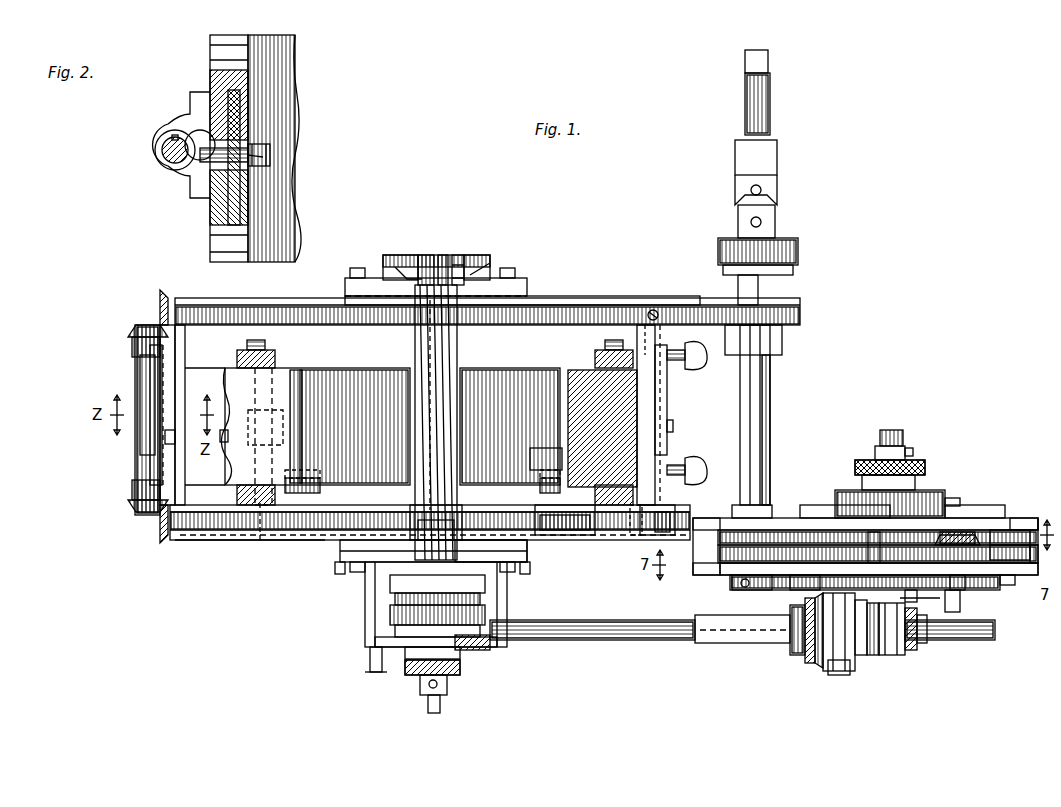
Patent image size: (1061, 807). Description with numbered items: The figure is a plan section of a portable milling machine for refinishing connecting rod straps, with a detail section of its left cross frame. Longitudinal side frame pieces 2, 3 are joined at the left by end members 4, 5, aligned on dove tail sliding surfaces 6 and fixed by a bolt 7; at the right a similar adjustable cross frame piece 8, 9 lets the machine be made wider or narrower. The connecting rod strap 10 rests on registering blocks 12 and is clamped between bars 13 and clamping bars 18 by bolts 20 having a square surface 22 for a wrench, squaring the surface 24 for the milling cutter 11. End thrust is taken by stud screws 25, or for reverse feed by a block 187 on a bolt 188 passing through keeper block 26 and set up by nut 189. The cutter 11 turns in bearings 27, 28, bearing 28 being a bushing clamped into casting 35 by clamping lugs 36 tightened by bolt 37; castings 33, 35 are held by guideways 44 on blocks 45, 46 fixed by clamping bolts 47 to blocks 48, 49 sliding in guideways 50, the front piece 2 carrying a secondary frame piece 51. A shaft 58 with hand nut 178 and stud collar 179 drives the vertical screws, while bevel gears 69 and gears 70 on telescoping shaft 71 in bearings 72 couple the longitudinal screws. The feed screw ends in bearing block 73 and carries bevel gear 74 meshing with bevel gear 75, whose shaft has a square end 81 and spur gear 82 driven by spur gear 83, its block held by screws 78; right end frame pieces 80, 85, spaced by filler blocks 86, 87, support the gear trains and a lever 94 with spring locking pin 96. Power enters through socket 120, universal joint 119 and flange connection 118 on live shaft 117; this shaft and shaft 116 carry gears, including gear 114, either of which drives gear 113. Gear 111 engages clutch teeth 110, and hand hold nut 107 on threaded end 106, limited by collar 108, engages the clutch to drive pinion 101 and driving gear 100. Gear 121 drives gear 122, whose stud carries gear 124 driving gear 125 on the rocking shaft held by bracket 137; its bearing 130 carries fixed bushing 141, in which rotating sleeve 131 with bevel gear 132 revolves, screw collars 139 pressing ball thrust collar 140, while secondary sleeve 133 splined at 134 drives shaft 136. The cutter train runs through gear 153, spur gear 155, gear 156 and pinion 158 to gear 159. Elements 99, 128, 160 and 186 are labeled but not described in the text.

In FIG. 1, the longitudinal side frame piece 2 is at (205, 540).
In FIG. 2, the longitudinal side frame piece 3 is at (280, 202).
In FIG. 1, the longitudinal side frame piece 3 is at (301, 308).
In FIG. 2, the cross frame member 4 is at (260, 162).
In FIG. 1, the cross frame member 4 is at (176, 455).
In FIG. 2, the cross frame member 5 is at (210, 72).
In FIG. 1, the cross frame member 5 is at (135, 372).
In FIG. 2, the dove tail sliding surfaces 6 is at (235, 120).
In FIG. 1, the dove tail sliding surfaces 6 is at (173, 392).
In FIG. 2, the bolt 7 is at (265, 143).
In FIG. 1, the bolt 7 is at (673, 425).
In FIG. 1, the cross frame piece 8 is at (645, 308).
In FIG. 1, the cross frame piece 9 is at (661, 402).
In FIG. 1, the connecting rod strap 10 is at (349, 370).
In FIG. 1, the milling cutter 11 is at (448, 390).
In FIG. 1, the registering blocks 12 is at (310, 472).
In FIG. 1, the bars 13 is at (260, 540).
In FIG. 1, the clamping bars 18 is at (275, 352).
In FIG. 1, the clamping bolts 20 is at (247, 342).
In FIG. 1, the square surface 22 is at (283, 420).
In FIG. 1, the surface 24 is at (386, 396).
In FIG. 1, the stud screws 25 is at (707, 357).
In FIG. 1, the keeper block 26 is at (645, 535).
In FIG. 1, the bearing 27 is at (436, 529).
In FIG. 1, the bearing 28 is at (438, 313).
In FIG. 1, the vertical casting 33 is at (375, 585).
In FIG. 1, the casting 35 is at (485, 257).
In FIG. 1, the clamping lugs 36 is at (442, 258).
In FIG. 1, the bolt 37 is at (460, 259).
In FIG. 1, the guideway 44 is at (412, 235).
In FIG. 1, the block 45 is at (530, 568).
In FIG. 1, the block 46 is at (367, 277).
In FIG. 1, the clamping bolts 47 is at (353, 268).
In FIG. 1, the block 48 is at (357, 550).
In FIG. 1, the block 49 is at (527, 280).
In FIG. 1, the guideways 50 is at (619, 296).
In FIG. 1, the secondary frame piece 51 is at (240, 530).
In FIG. 1, the shaft 58 is at (448, 693).
In FIG. 1, the bevel gears 69 is at (164, 290).
In FIG. 1, the gears 70 is at (129, 327).
In FIG. 2, the telescoping shaft 71 is at (170, 152).
In FIG. 1, the telescoping shaft 71 is at (137, 440).
In FIG. 1, the bearings 72 is at (132, 340).
In FIG. 1, the bearing block 73 is at (925, 503).
In FIG. 1, the bevel gear 74 is at (955, 497).
In FIG. 1, the bevel gear 75 is at (960, 537).
In FIG. 1, the screws 78 is at (965, 532).
In FIG. 1, the frame piece 80 is at (1030, 575).
In FIG. 1, the outer end 81 is at (958, 610).
In FIG. 1, the spur gear 82 is at (960, 592).
In FIG. 1, the spur gear 83 is at (995, 549).
In FIG. 1, the frame piece 85 is at (1020, 522).
In FIG. 1, the filler block 86 is at (1030, 545).
In FIG. 1, the filler block 87 is at (715, 578).
In FIG. 1, the lever 94 is at (1007, 585).
In FIG. 1, the spring locking pin 96 is at (920, 605).
In FIG. 1, the edge 99 is at (1045, 517).
In FIG. 1, the driving gear 100 is at (990, 532).
In FIG. 1, the pinion 101 is at (862, 477).
In FIG. 1, the outer end 106 is at (891, 428).
In FIG. 1, the hand hold nut 107 is at (860, 460).
In FIG. 1, the collar 108 is at (893, 448).
In FIG. 1, the spur gear teeth 110 is at (845, 503).
In FIG. 1, the gear 111 is at (807, 505).
In FIG. 1, the gear 113 is at (768, 520).
In FIG. 1, the gear 114 is at (725, 519).
In FIG. 1, the shaft 116 is at (768, 440).
In FIG. 1, the live driving shaft 117 is at (770, 382).
In FIG. 1, the flange connection 118 is at (798, 253).
In FIG. 1, the universal joint 119 is at (777, 162).
In FIG. 1, the socket 120 is at (768, 90).
In FIG. 1, the gear 121 is at (798, 580).
In FIG. 1, the gear 122 is at (888, 558).
In FIG. 1, the gear 124 is at (915, 640).
In FIG. 1, the gear 125 is at (798, 655).
In FIG. 1, the collar 128 is at (912, 652).
In FIG. 1, the bearing 130 is at (835, 675).
In FIG. 1, the rotating sleeve 131 is at (810, 664).
In FIG. 1, the bevel gear 132 is at (820, 670).
In FIG. 1, the secondary sleeve 133 is at (770, 643).
In FIG. 1, the spline 134 is at (717, 643).
In FIG. 1, the shaft 136 is at (650, 640).
In FIG. 1, the supporting bracket 137 is at (860, 658).
In FIG. 1, the screw collars 139 is at (923, 647).
In FIG. 1, the ball bearing thrust collar 140 is at (895, 657).
In FIG. 1, the fixed bushing 141 is at (873, 658).
In FIG. 1, the gear 153 is at (495, 645).
In FIG. 1, the spur gear 155 is at (390, 615).
In FIG. 1, the gear 156 is at (420, 658).
In FIG. 1, the pinion 158 is at (385, 647).
In FIG. 1, the gear 159 is at (437, 587).
In FIG. 1, the plate 160 is at (395, 633).
In FIG. 1, the hand nut 178 is at (463, 668).
In FIG. 1, the stud collar 179 is at (420, 675).
In FIG. 1, the stem 186 is at (434, 713).
In FIG. 1, the block 187 is at (540, 485).
In FIG. 1, the bolt 188 is at (595, 537).
In FIG. 1, the nut 189 is at (660, 537).